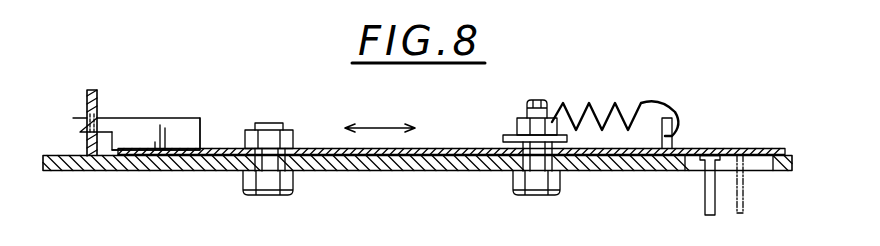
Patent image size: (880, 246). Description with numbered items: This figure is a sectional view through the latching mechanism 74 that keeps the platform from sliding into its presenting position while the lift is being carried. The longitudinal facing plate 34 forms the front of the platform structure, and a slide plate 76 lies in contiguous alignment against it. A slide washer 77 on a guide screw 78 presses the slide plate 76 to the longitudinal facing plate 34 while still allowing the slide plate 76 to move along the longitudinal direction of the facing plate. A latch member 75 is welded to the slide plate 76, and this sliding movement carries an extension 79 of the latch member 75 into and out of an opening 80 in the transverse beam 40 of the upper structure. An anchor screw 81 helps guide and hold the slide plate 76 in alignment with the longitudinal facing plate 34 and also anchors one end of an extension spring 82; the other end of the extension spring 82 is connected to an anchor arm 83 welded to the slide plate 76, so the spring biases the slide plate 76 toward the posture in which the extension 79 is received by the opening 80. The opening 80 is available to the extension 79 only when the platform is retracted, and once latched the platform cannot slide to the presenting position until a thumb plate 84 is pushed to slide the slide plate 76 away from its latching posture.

The longitudinal facing plate 34 is at (365, 172).
The transverse beam 40 is at (97, 97).
The latching mechanism 74 is at (504, 93).
The latch member 75 is at (188, 127).
The slide plate 76 is at (698, 150).
The slide washer 77 is at (292, 146).
The guide screw 78 is at (273, 122).
The extension 79 is at (83, 138).
The opening 80 is at (75, 119).
The anchor screw 81 is at (535, 102).
The extension spring 82 is at (585, 103).
The anchor arm 83 is at (677, 137).
The thumb plate 84 is at (703, 198).